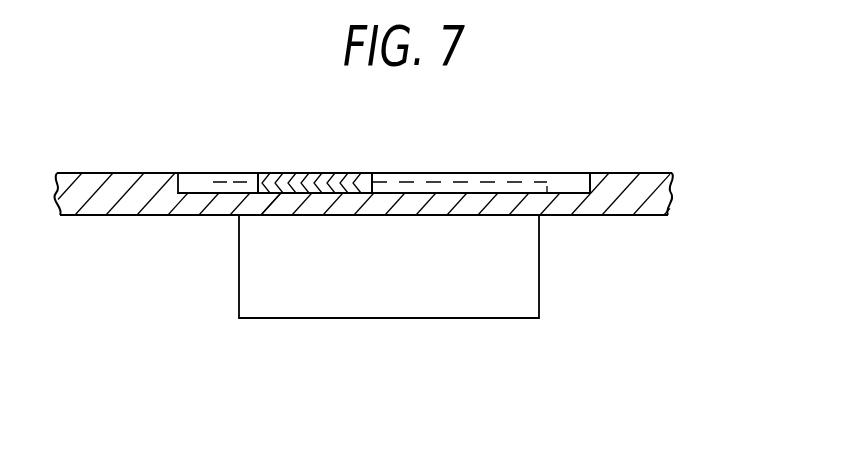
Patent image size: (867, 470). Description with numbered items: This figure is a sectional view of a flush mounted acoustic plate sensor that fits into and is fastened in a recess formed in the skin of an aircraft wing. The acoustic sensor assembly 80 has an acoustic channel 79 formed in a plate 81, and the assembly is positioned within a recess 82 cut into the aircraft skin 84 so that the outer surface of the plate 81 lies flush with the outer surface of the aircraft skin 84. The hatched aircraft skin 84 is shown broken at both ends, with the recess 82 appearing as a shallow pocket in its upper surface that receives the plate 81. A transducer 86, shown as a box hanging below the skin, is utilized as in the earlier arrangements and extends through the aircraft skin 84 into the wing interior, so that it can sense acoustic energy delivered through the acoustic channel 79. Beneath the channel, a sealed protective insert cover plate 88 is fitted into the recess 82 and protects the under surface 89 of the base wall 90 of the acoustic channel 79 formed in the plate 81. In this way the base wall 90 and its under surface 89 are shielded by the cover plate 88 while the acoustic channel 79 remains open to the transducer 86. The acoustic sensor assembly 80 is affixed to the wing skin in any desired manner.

The acoustic channel 79 is at (280, 197).
The acoustic sensor assembly 80 is at (511, 166).
The plate 81 is at (427, 173).
The recess 82 is at (594, 183).
The aircraft skin 84 is at (617, 218).
The transducer 86 is at (483, 288).
The sealed protective insert cover plate 88 is at (264, 176).
The under surface 89 is at (342, 190).
The base wall 90 is at (268, 173).